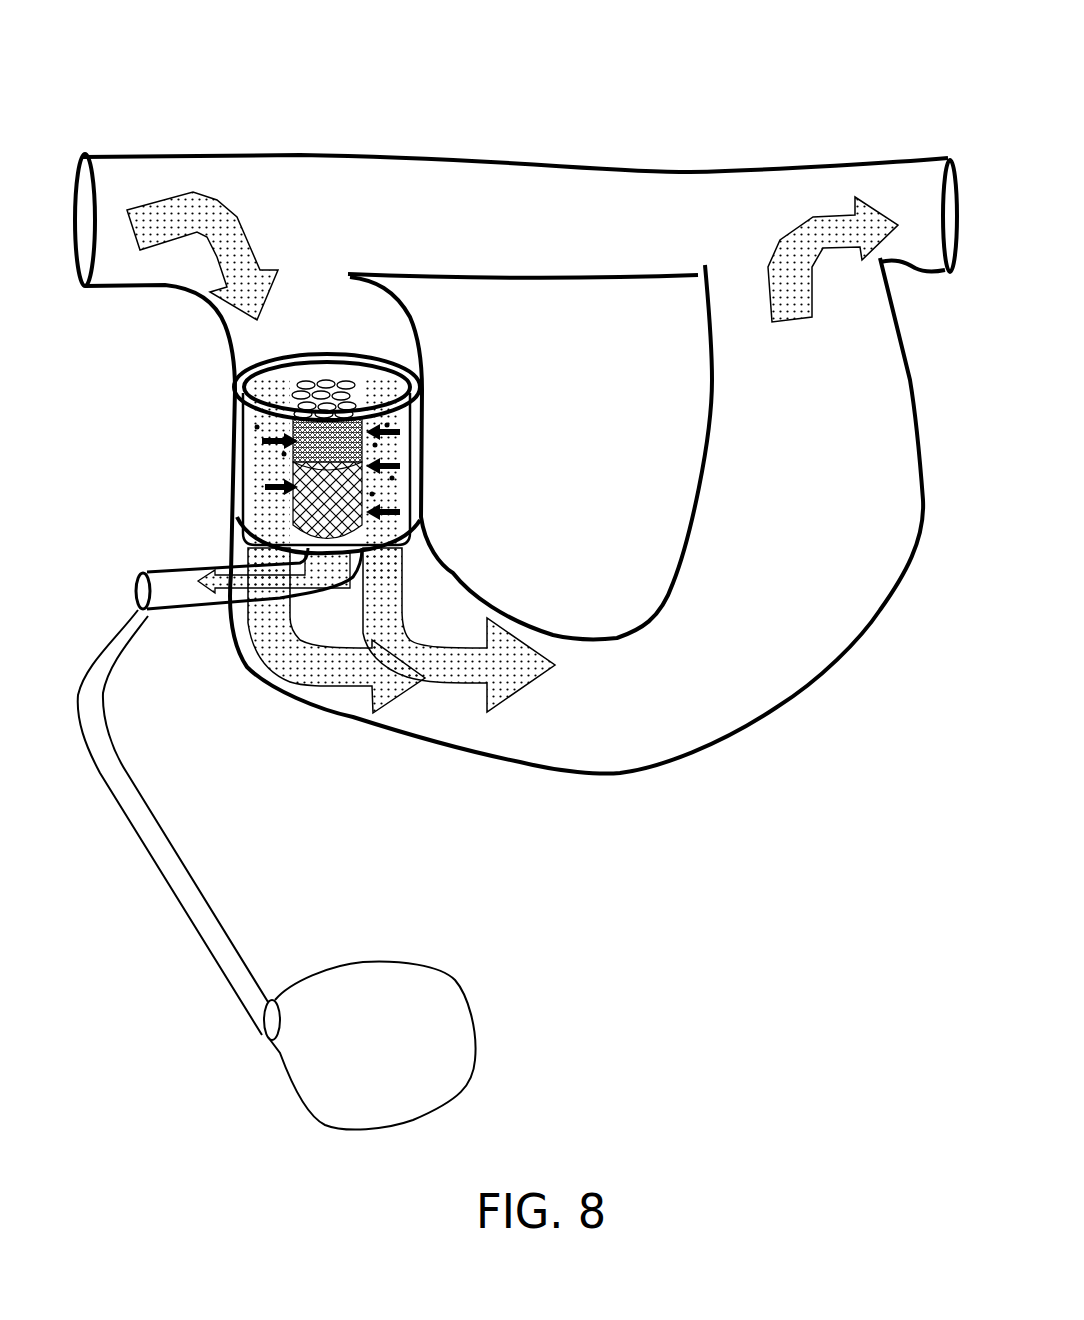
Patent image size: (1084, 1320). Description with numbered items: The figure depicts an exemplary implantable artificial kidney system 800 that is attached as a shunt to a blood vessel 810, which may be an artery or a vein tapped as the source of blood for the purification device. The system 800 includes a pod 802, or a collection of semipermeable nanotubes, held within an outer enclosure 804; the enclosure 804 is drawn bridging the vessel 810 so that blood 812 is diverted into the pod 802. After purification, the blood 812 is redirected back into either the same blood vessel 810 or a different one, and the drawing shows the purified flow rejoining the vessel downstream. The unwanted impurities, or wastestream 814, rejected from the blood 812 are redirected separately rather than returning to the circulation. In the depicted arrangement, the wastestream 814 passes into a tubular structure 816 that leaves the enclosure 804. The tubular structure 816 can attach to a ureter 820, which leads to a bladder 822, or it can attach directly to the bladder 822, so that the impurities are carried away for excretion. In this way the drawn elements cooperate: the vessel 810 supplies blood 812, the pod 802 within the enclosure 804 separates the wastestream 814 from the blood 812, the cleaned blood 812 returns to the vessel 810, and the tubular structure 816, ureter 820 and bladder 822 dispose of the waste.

The implantable artificial kidney system 800 is at (333, 467).
The pod 802 is at (298, 467).
The outer enclosure 804 is at (226, 383).
The blood vessel 810 is at (274, 143).
The blood 812 is at (266, 373).
The unwanted impurities (wastestream) 814 is at (222, 592).
The tubular structure 816 is at (152, 563).
The ureter 820 is at (132, 768).
The bladder 822 is at (403, 958).